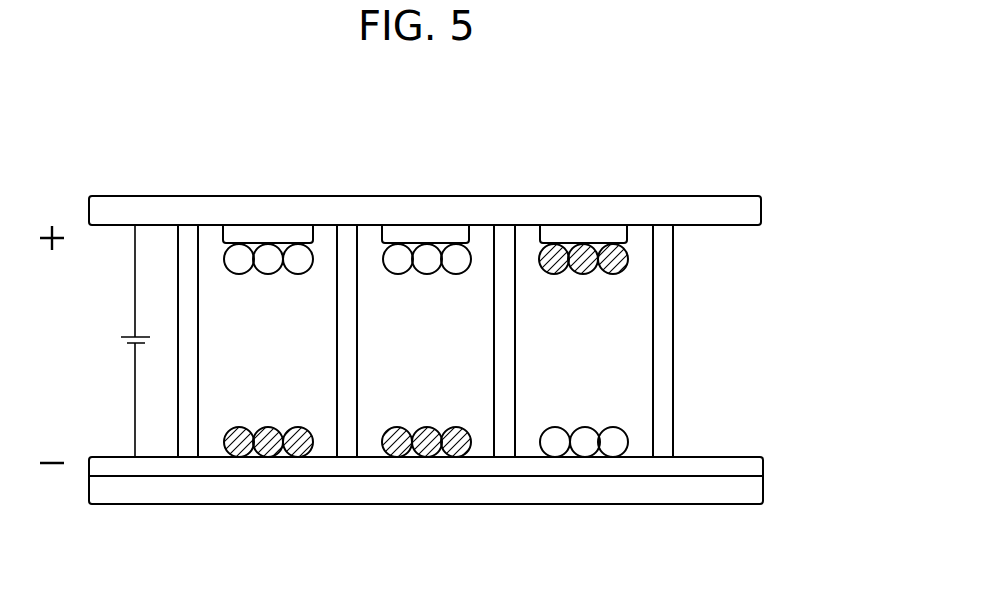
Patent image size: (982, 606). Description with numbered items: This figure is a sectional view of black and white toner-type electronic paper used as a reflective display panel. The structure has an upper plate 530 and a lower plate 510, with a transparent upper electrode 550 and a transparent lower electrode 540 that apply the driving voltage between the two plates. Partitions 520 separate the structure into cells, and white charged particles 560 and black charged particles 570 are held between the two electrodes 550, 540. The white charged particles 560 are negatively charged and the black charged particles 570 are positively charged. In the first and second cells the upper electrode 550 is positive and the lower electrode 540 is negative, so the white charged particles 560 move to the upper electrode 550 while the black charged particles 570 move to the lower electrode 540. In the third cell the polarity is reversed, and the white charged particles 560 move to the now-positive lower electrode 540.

The lower plate 510 is at (757, 492).
The partitions 520 is at (667, 343).
The upper plate 530 is at (453, 206).
The lower electrode 540 is at (757, 465).
The upper electrode 550 is at (597, 230).
The white charged particles 560 is at (585, 448).
The black charged particles 570 is at (427, 448).